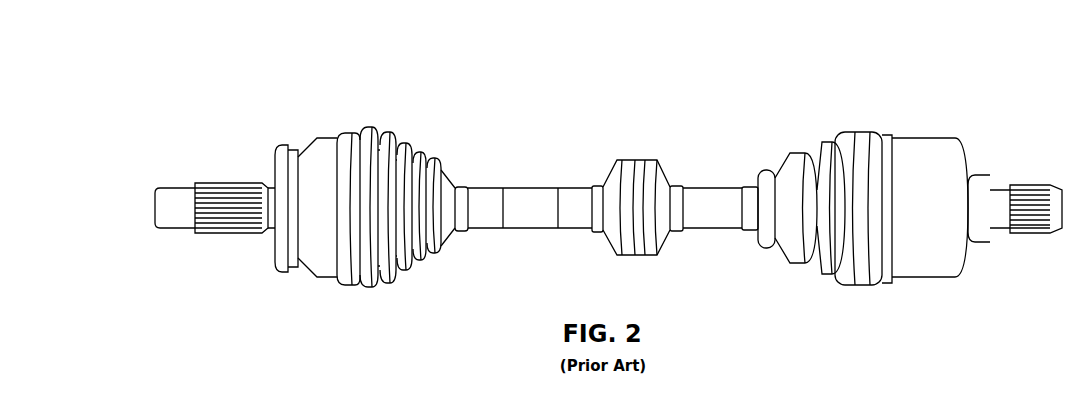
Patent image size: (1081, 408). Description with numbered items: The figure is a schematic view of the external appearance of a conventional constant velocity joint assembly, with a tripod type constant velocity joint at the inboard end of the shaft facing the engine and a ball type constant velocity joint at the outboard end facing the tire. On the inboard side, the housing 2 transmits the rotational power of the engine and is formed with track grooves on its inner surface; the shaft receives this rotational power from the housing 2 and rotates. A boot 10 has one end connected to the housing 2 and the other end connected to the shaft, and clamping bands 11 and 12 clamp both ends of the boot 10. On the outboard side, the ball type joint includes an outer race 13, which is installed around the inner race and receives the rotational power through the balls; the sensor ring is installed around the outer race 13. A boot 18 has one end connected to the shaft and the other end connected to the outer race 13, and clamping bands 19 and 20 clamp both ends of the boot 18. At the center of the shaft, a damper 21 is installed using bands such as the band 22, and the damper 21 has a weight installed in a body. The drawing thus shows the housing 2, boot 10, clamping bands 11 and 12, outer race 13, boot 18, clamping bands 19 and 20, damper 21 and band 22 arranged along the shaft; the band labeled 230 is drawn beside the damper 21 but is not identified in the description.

The housing 2 is at (930, 150).
The boot 10 is at (793, 168).
The clamping band 11 is at (875, 132).
The clamping band 12 is at (746, 187).
The outer race 13 is at (315, 155).
The boot 18 is at (377, 128).
The clamping band 19 is at (460, 187).
The clamping band 20 is at (352, 133).
The damper 21 is at (634, 160).
The band 22 is at (596, 186).
The shaft ring 230 is at (678, 186).